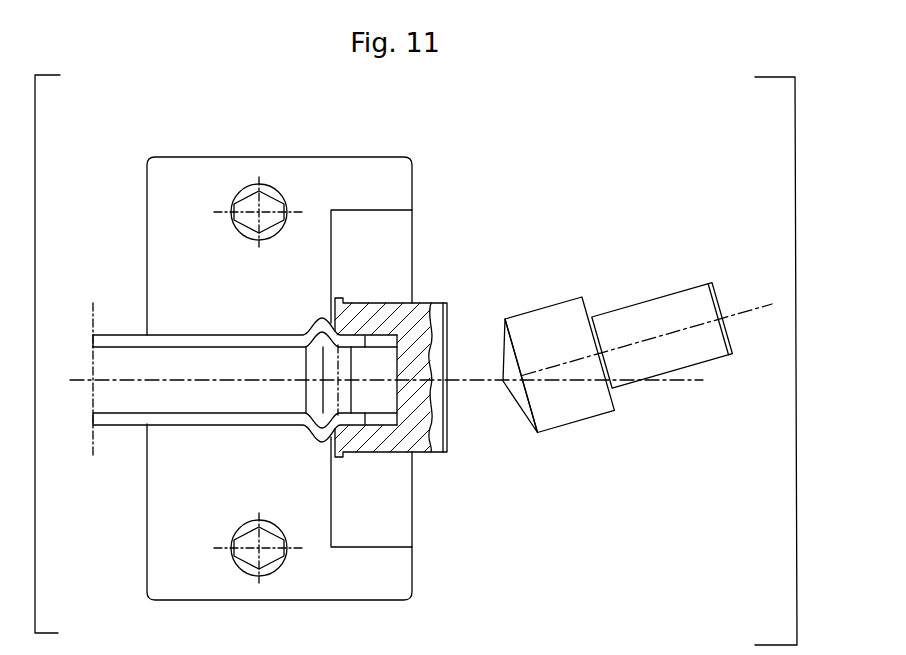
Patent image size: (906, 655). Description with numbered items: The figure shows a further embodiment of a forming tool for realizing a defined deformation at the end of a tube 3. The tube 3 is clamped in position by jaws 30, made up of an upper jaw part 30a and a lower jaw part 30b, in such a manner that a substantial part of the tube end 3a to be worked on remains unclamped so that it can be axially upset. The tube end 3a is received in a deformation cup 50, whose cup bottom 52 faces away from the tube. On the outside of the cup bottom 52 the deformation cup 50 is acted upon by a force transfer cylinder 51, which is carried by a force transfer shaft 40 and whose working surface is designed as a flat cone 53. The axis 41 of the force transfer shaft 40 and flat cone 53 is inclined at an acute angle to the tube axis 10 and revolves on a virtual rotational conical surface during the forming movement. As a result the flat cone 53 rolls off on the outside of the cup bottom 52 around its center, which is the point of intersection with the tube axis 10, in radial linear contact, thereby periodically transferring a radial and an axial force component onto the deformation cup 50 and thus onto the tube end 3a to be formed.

The jaws 30 is at (199, 150).
The jaw part 30a is at (162, 217).
The jaw part 30b is at (150, 540).
The tube 3 is at (97, 337).
The tube end 3a is at (367, 343).
The tube axis 10 is at (115, 382).
The deformation cup 50 is at (413, 317).
The cup bottom 52 is at (448, 443).
The flat cone 53 is at (503, 353).
The force transfer shaft 40 is at (658, 378).
The force transfer cylinder 51 is at (638, 300).
The axis 41 is at (752, 318).